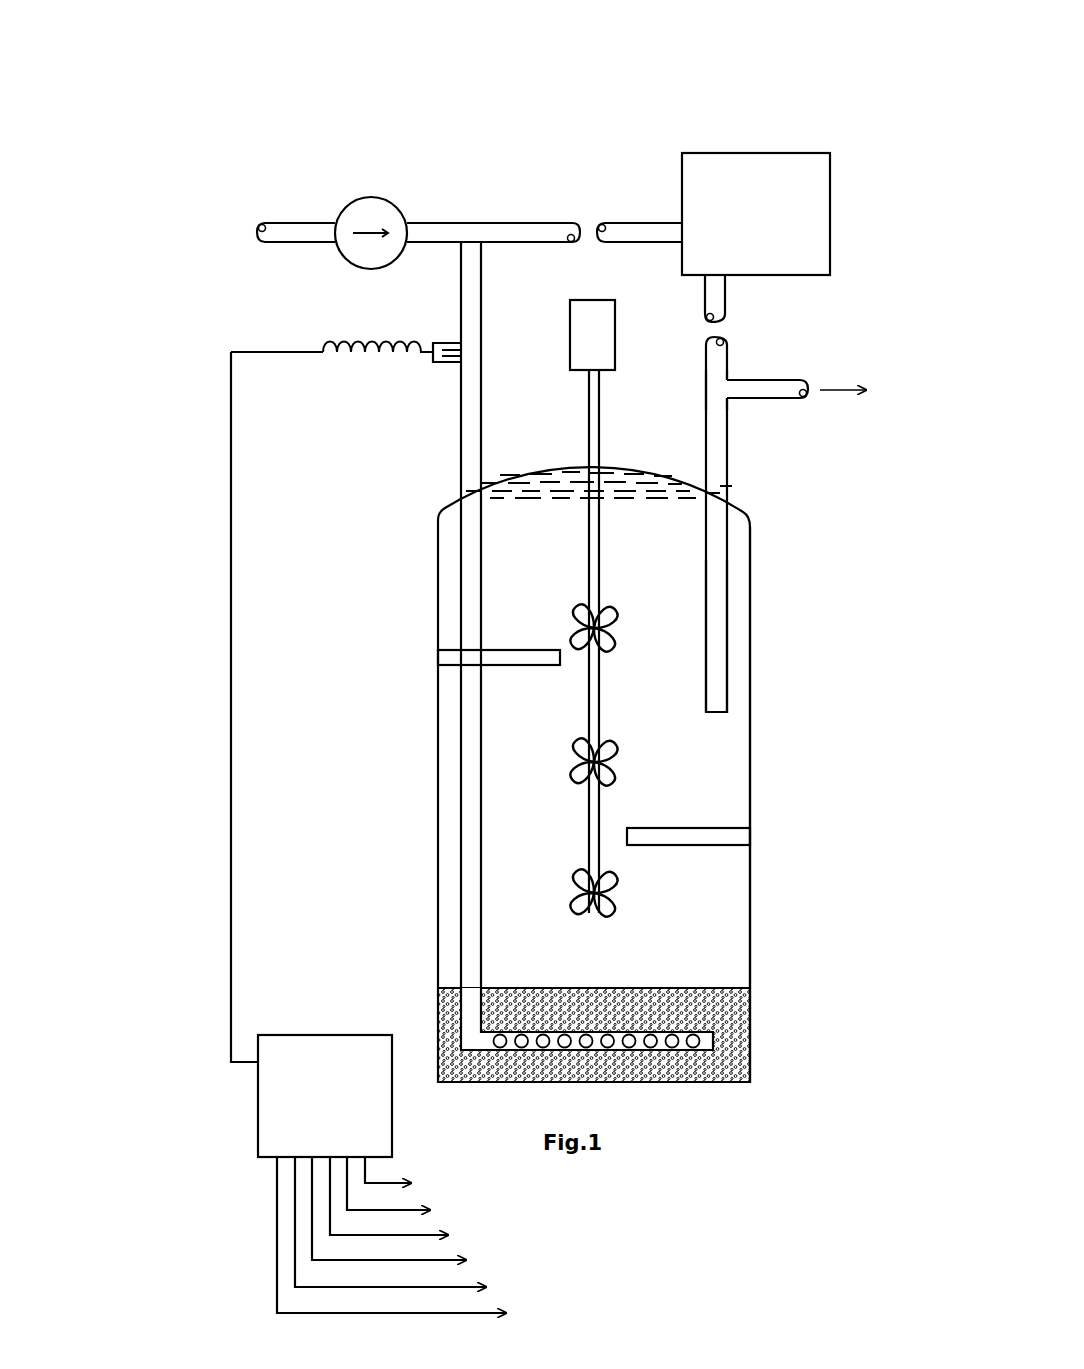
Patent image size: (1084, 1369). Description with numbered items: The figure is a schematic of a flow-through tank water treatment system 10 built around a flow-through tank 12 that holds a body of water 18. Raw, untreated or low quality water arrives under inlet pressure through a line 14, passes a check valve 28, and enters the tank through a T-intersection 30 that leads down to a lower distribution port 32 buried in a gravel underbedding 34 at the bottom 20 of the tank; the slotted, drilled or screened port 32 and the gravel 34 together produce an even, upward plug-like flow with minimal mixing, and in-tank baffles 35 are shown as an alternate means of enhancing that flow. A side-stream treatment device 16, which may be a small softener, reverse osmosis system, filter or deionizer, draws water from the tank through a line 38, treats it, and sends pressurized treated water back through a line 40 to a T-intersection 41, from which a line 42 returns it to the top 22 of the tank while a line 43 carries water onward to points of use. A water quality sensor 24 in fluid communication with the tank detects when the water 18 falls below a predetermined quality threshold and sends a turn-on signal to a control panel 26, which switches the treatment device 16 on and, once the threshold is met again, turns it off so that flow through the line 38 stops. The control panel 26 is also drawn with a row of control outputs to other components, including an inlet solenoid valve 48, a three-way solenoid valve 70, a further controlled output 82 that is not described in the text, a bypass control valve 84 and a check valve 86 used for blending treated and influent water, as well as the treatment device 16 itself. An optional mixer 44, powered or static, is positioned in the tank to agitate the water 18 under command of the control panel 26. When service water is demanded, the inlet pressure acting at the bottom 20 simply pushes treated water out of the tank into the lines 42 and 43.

The water treatment system 10 is at (233, 105).
The flow-through tank 12 is at (448, 570).
The line 14 is at (297, 222).
The side-stream treatment device 16 is at (808, 198).
The water 18 is at (660, 472).
The bottom 20 is at (729, 962).
The top 22 is at (750, 603).
The water quality sensor 24 is at (442, 360).
The control panel 26 is at (287, 1112).
The check valve 28 is at (407, 205).
The T-intersection 30 is at (468, 224).
The lower distribution port 32 is at (720, 1047).
The gravel underbedding 34 is at (735, 1003).
The in-tank baffles 35 is at (505, 650).
The line 38 is at (543, 224).
The line 40 is at (712, 362).
The T-intersection 41 is at (717, 388).
The line 42 is at (713, 652).
The line 43 is at (777, 393).
The mixer 44 is at (595, 833).
The inlet solenoid valve 48 is at (405, 1177).
The three-way solenoid valve 70 is at (406, 1190).
The output signal 82 is at (406, 1203).
The bypass control valve 84 is at (408, 1229).
The check valve 86 is at (409, 1242).